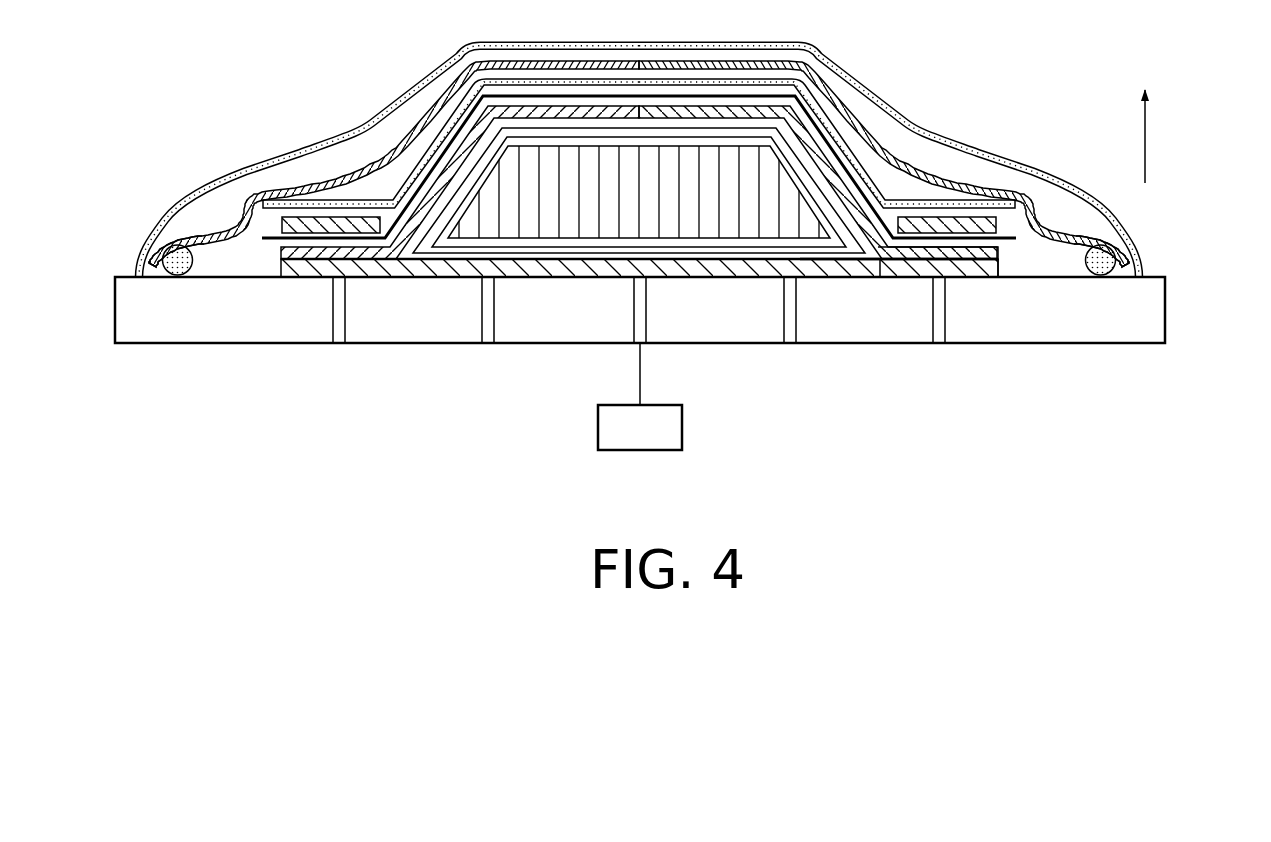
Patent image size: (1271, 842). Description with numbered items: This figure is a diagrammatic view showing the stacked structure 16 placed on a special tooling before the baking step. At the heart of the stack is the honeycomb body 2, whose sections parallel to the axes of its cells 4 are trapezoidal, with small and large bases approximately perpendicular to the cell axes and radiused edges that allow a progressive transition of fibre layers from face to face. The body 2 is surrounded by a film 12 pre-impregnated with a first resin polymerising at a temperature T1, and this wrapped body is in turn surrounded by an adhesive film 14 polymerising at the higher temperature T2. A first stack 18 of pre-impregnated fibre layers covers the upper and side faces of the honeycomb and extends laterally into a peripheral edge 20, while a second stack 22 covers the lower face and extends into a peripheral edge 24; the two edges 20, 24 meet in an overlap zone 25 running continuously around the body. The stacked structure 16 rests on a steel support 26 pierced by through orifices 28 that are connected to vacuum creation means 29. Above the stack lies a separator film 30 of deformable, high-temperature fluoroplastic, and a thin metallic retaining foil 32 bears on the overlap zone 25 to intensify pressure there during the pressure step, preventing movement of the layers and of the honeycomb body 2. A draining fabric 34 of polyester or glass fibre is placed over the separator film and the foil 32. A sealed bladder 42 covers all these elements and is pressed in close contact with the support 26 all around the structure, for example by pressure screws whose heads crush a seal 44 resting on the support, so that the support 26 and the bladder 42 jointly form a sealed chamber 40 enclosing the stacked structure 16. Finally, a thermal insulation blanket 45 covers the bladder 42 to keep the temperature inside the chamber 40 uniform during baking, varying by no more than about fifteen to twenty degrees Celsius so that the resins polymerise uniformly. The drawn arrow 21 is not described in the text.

The honeycomb body 2 is at (543, 260).
The cells 4 is at (716, 225).
The film 12 is at (877, 187).
The adhesive film 14 is at (823, 150).
The stacked structure 16 is at (745, 279).
The first stack 18 is at (690, 117).
The peripheral edge 20 is at (903, 250).
The direction arrow 21 is at (1147, 137).
The second stack 22 is at (823, 262).
The peripheral edge 24 is at (973, 267).
The overlap zone 25 is at (979, 232).
The support 26 is at (282, 311).
The orifices 28 is at (488, 323).
The vacuum creation means 29 is at (667, 433).
The separator film 30 is at (878, 197).
The retaining foil 32 is at (343, 222).
The draining fabric 34 is at (602, 87).
The sealed chamber 40 is at (190, 238).
The sealed bladder 42 is at (432, 102).
The seal 44 is at (172, 277).
The thermal insulation blanket 45 is at (263, 160).